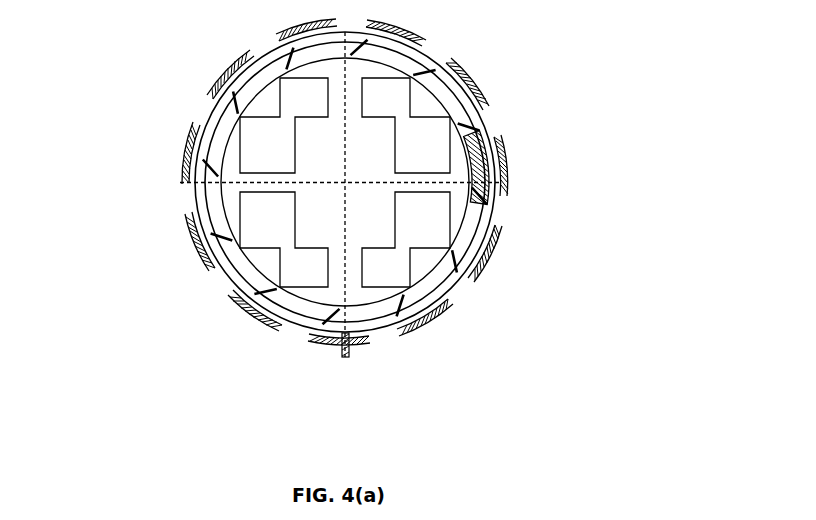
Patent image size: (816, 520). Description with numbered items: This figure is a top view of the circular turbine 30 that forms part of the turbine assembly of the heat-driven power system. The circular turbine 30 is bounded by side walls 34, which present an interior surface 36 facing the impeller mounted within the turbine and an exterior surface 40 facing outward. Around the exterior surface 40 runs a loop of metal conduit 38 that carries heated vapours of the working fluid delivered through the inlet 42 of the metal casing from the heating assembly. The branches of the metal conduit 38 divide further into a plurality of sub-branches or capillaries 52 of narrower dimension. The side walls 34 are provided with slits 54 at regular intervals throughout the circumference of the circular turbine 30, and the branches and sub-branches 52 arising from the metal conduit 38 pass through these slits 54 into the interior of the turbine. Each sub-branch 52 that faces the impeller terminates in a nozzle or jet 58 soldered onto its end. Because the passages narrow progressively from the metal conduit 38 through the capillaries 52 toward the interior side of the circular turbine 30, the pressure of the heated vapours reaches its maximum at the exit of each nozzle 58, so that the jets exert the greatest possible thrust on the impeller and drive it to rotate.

The circular turbine 30 is at (532, 117).
The side walls 34 is at (427, 328).
The interior surface 36 is at (205, 213).
The metal conduit 38 is at (497, 218).
The exterior surface 40 is at (433, 297).
The inlet 42 is at (335, 355).
The sub-branches/capillaries 52 is at (510, 173).
The slits 54 is at (227, 101).
The nozzle/jet 58 is at (485, 121).